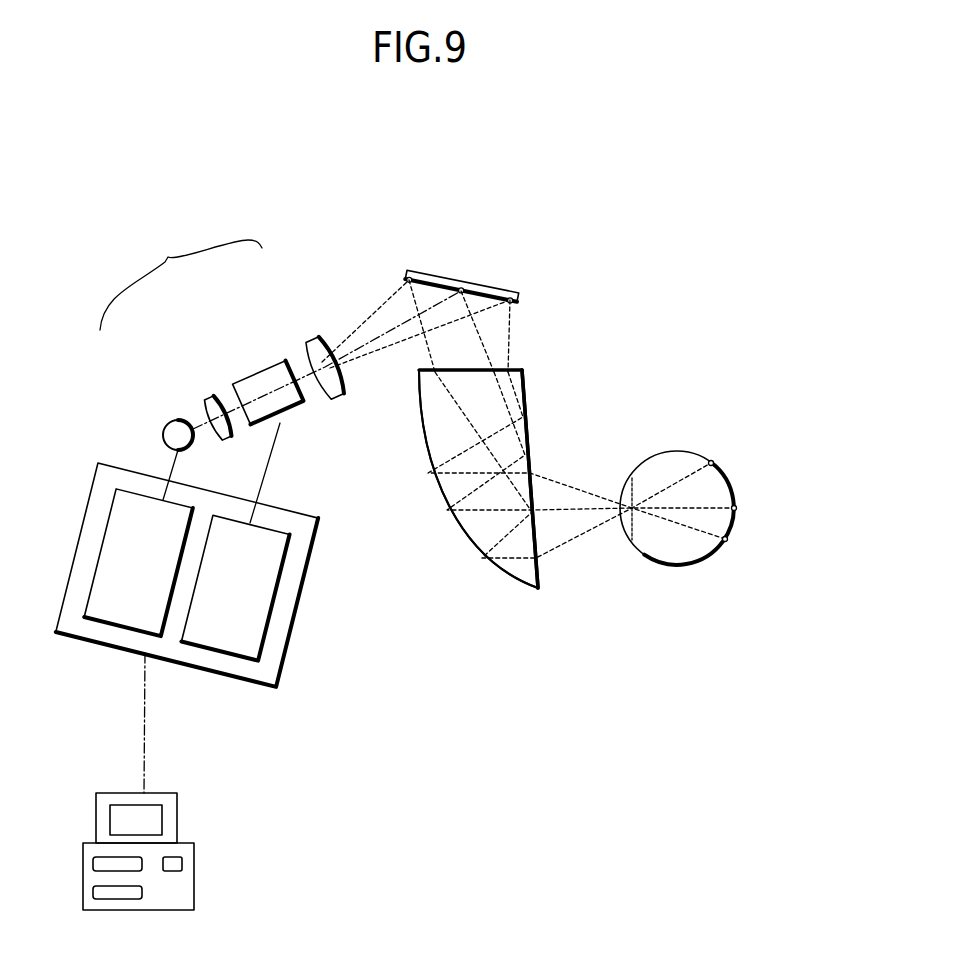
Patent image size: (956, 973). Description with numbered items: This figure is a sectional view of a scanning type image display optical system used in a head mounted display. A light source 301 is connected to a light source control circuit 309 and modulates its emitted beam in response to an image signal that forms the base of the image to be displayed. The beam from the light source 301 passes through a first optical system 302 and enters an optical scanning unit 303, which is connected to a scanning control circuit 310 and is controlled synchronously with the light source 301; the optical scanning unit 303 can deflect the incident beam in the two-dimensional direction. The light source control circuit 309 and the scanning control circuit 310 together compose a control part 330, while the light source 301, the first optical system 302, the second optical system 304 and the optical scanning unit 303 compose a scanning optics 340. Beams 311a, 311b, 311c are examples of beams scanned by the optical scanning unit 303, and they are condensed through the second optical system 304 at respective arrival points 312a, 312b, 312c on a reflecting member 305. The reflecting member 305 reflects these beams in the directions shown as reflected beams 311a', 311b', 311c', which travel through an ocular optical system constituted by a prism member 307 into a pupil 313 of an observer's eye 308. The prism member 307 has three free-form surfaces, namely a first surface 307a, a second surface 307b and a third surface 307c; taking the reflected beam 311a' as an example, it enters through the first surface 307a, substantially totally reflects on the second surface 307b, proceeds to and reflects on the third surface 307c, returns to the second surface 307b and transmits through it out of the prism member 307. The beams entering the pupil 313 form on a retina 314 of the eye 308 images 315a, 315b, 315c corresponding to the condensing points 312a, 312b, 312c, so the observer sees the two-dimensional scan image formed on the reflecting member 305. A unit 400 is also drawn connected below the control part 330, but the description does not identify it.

The scanning optics 340 is at (181, 276).
The control part 330 is at (297, 635).
The light source control circuit 309 is at (122, 623).
The scanning control circuit 310 is at (217, 647).
The light source 301 is at (163, 437).
The first optical system 302 is at (205, 402).
The optical scanning unit 303 is at (253, 380).
The second optical system 304 is at (312, 342).
The reflecting member 305 is at (447, 278).
The beam 311a is at (327, 340).
The beam 311b is at (420, 365).
The beam 311c is at (335, 306).
The reflected beam 311a' is at (508, 263).
The reflected beam 311b' is at (554, 336).
The reflected beam 311c' is at (398, 275).
The arrival point 312a is at (465, 292).
The arrival point 312b is at (517, 284).
The arrival point 312c is at (408, 268).
The prism member 307 is at (467, 538).
The first surface 307a is at (517, 370).
The second surface 307b is at (530, 465).
The third surface 307c is at (420, 447).
The observer's eye 308 is at (668, 458).
The pupil 313 is at (625, 528).
The retina 314 is at (673, 565).
The image 315a is at (737, 510).
The image 315b is at (713, 462).
The image 315c is at (727, 542).
The computer 400 is at (195, 877).